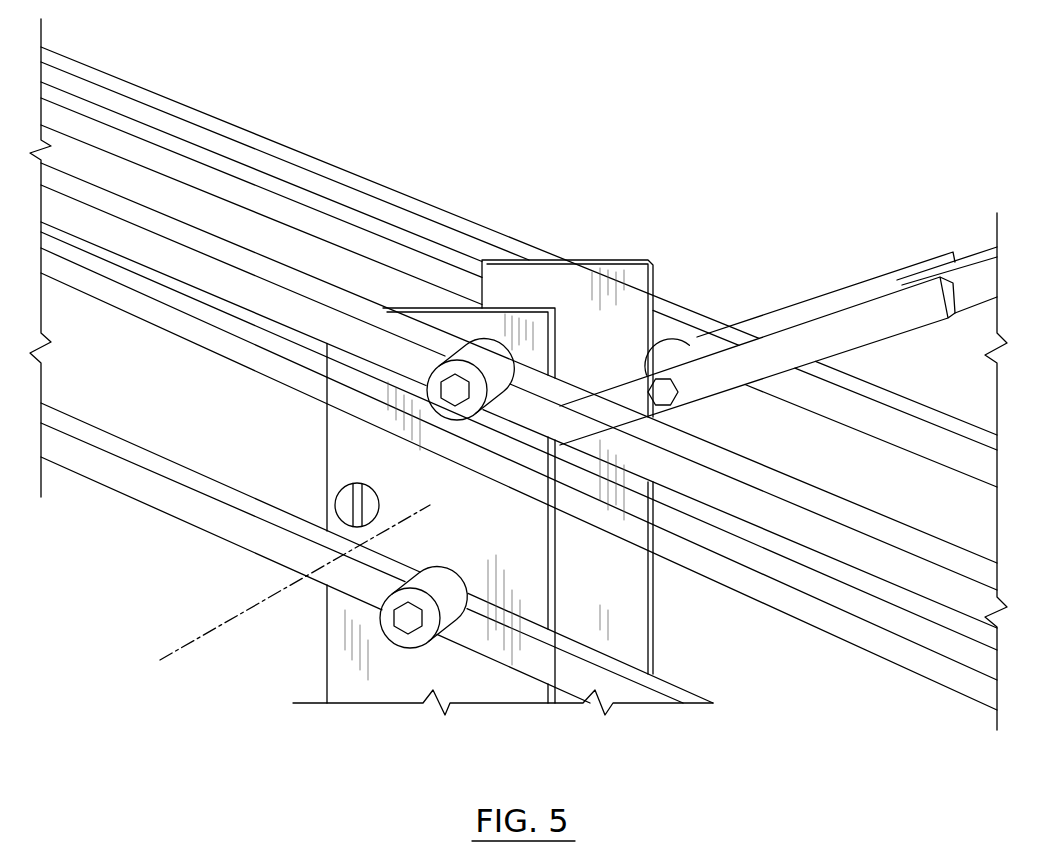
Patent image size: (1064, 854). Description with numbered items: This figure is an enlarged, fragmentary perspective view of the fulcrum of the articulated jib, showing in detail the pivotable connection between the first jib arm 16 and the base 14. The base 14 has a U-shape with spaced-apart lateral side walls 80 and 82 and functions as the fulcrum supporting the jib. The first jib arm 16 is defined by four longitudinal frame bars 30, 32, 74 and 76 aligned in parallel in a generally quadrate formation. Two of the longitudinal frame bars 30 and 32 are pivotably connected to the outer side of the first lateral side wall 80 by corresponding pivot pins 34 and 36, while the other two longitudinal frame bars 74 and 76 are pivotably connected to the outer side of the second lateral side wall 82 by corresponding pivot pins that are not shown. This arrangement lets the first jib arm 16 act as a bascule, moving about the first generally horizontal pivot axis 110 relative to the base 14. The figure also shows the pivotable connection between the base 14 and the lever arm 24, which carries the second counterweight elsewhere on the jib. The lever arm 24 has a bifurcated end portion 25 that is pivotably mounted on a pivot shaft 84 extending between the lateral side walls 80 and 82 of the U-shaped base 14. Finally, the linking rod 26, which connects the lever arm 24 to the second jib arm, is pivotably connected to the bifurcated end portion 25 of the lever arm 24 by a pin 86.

The base 14 is at (347, 655).
The first jib arm 16 is at (384, 184).
The lever arm 24 is at (970, 258).
The bifurcated end portion 25 is at (791, 308).
The linking rod 26 is at (232, 187).
The longitudinal frame bar 30 is at (513, 660).
The longitudinal frame bar 32 is at (950, 560).
The pivot pin 34 is at (407, 628).
The pivot pin 36 is at (453, 390).
The longitudinal frame bar 74 is at (787, 598).
The longitudinal frame bar 76 is at (950, 422).
The lateral side wall 80 is at (360, 435).
The lateral side wall 82 is at (591, 290).
The pivot shaft 84 is at (345, 500).
The pin 86 is at (678, 402).
The first generally horizontal pivot axis 110 is at (222, 628).